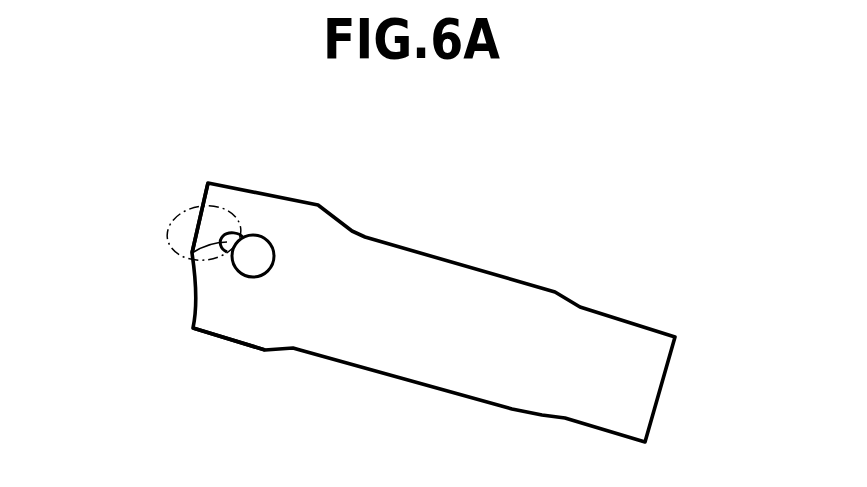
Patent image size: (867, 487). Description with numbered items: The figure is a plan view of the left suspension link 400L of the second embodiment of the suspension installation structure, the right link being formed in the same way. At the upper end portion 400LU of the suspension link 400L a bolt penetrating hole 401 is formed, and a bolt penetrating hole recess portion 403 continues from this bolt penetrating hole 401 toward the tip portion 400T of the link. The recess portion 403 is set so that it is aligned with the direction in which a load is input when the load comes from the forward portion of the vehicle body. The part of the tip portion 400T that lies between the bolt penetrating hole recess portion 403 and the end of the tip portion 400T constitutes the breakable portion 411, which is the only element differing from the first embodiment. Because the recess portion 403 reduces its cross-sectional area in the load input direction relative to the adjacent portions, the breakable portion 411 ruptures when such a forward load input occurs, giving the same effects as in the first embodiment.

The suspension link 400L is at (648, 393).
The upper end portion 400LU is at (232, 337).
The tip portion 400T is at (200, 193).
The breakable portion 411 is at (167, 238).
The bolt penetrating hole 401 is at (263, 247).
The bolt penetrating hole recess portion 403 is at (192, 253).